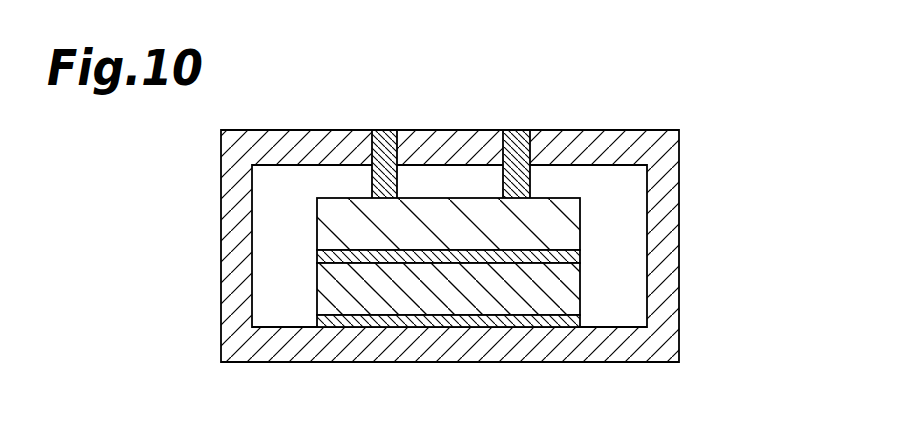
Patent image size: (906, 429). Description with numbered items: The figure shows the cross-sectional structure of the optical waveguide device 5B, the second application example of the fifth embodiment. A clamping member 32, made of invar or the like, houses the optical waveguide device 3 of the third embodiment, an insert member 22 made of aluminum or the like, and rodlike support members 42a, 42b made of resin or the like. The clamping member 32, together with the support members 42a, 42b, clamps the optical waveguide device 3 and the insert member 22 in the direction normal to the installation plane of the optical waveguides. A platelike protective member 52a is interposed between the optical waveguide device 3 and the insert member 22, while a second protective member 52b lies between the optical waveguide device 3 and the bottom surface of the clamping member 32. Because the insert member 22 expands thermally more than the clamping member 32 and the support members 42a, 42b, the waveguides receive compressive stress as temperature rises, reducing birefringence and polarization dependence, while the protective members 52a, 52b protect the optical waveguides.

The optical waveguide device 5B is at (505, 211).
The clamping member 32 is at (678, 151).
The support member 42a is at (382, 130).
The support member 42b is at (513, 130).
The insert member 22 is at (570, 226).
The protective member 52a is at (573, 257).
The optical waveguide device 3 is at (573, 297).
The protective member 52b is at (573, 323).